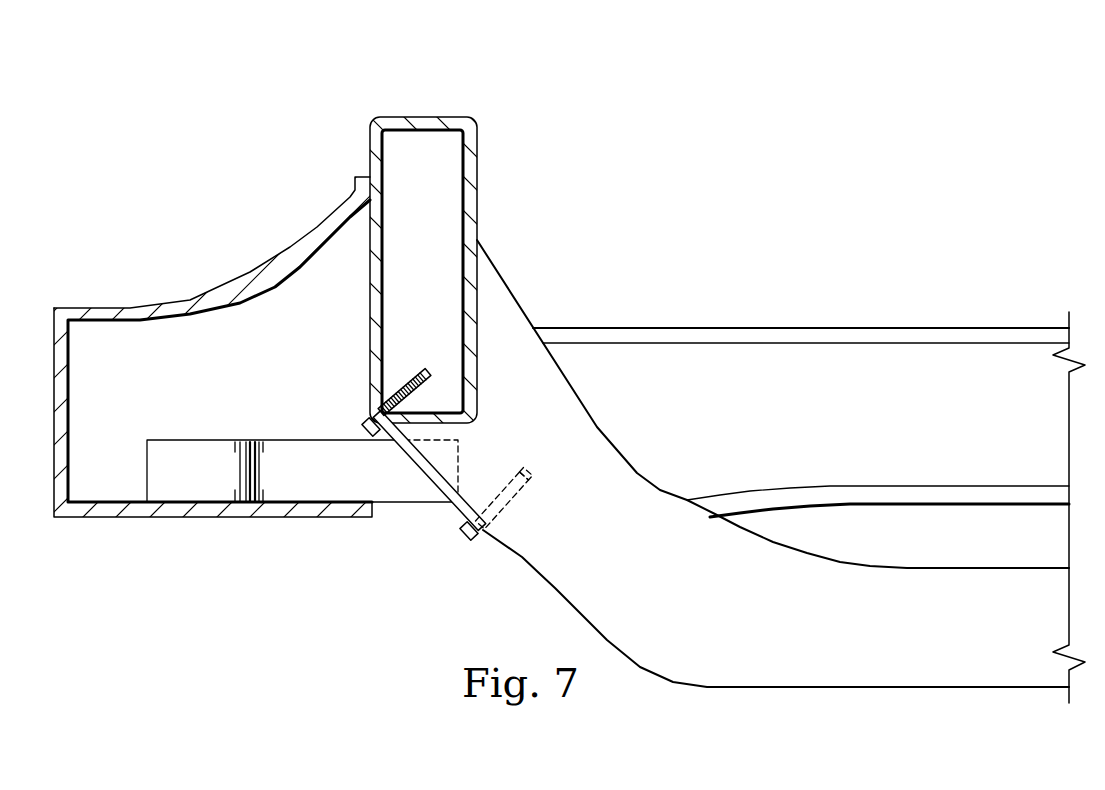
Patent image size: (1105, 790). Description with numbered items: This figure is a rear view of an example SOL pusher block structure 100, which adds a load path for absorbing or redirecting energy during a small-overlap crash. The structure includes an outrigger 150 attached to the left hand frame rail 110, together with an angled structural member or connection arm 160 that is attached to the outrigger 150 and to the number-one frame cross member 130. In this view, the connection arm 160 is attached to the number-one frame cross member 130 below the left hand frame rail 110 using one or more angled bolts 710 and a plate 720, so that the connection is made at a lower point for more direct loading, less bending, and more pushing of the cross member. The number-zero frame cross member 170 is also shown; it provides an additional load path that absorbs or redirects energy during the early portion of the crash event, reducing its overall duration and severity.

The SOL pusher block structure 100 is at (846, 80).
The left hand frame rail 110 is at (423, 116).
The No. 1 frame cross member 130 is at (768, 327).
The outrigger 150 is at (108, 518).
The angled structural member or connection arm 160 is at (207, 452).
The No. 0 frame cross member 170 is at (843, 690).
The angled bolts 710 is at (362, 428).
The plate 720 is at (430, 488).